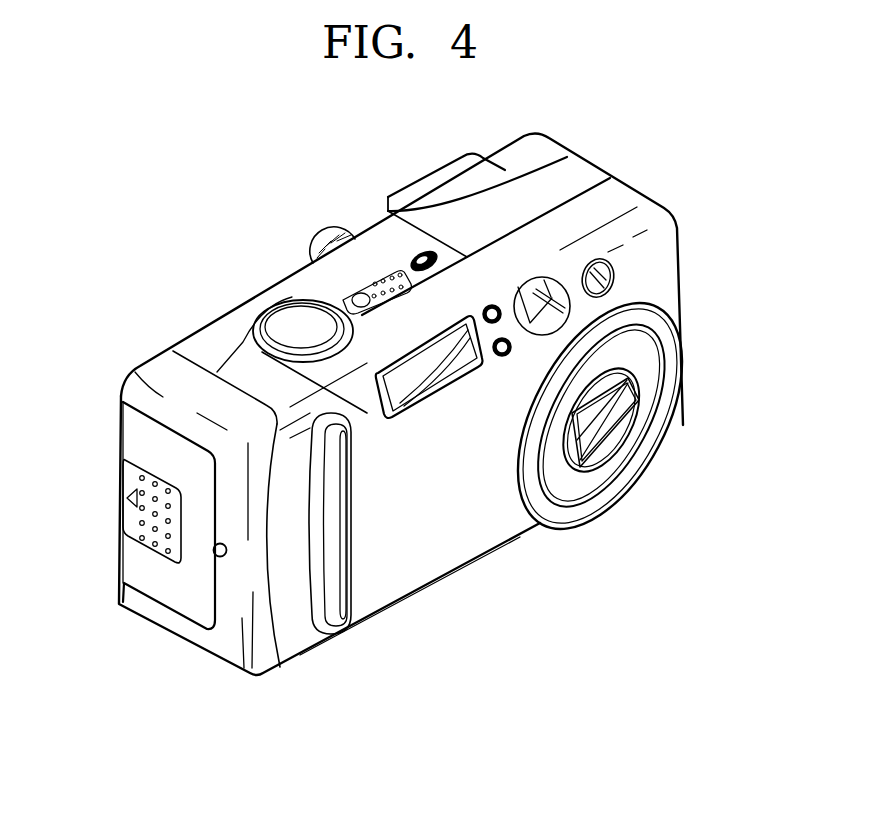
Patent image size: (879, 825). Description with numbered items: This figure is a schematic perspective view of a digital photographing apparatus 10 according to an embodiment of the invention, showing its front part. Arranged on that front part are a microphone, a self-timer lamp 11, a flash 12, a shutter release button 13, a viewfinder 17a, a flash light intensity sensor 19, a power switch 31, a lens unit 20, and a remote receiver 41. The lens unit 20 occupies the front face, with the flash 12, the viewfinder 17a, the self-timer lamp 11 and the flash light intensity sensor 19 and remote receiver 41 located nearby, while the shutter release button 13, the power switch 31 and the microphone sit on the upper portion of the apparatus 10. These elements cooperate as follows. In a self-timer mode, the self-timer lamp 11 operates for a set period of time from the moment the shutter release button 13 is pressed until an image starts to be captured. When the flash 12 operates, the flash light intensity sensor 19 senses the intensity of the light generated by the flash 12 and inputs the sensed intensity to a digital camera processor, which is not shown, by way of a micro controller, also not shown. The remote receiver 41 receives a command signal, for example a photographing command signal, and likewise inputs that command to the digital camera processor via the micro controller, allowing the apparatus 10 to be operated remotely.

The digital photographing apparatus 10 is at (142, 260).
The self-timer lamp 11 is at (596, 262).
The flash 12 is at (410, 373).
The shutter release button 13 is at (296, 325).
The viewfinder 17a is at (543, 290).
The flash light intensity sensor 19 is at (502, 316).
The lens unit 20 is at (603, 423).
The power switch 31 is at (332, 232).
The remote receiver 41 is at (512, 349).